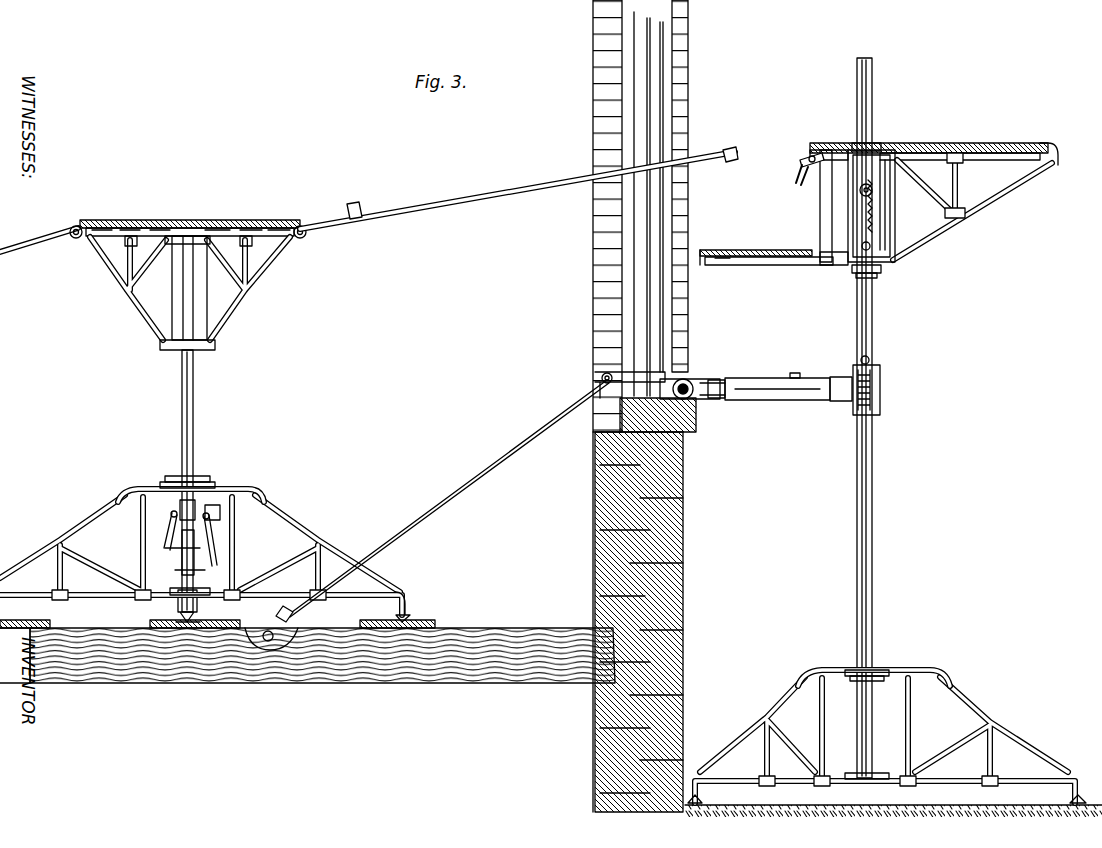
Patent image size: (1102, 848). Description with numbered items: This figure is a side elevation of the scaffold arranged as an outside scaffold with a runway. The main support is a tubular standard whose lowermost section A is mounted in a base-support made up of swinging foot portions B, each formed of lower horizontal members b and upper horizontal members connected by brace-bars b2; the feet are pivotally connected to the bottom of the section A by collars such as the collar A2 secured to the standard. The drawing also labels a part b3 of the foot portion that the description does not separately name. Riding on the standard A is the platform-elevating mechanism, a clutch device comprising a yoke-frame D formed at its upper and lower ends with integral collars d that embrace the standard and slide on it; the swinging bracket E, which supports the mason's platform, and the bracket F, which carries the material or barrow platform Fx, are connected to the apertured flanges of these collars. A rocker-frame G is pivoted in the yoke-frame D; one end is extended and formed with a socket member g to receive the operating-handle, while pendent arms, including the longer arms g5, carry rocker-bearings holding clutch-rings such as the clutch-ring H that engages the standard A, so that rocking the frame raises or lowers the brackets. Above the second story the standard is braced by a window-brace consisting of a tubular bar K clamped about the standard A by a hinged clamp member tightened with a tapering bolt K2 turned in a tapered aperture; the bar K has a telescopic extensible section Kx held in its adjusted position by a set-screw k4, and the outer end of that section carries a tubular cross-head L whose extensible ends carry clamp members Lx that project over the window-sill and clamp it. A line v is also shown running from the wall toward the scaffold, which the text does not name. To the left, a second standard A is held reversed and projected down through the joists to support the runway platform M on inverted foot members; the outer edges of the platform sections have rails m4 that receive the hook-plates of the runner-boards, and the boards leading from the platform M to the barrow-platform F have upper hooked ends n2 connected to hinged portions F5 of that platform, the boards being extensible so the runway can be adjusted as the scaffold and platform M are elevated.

The standard section A is at (190, 400).
The collar A2 is at (878, 772).
The swinging foot portion B is at (543, 646).
The lower horizontal member b is at (850, 768).
The brace-bar b2 is at (1012, 756).
The inner brace b3 is at (789, 754).
The runway platform M is at (228, 228).
The rail m4 is at (170, 228).
The hooked end n2 is at (812, 152).
The barrow platform Fx is at (934, 142).
The bracket F is at (972, 206).
The hinged portion F5 is at (782, 169).
The swinging bracket E is at (825, 262).
The yoke-frame D is at (892, 226).
The collar d is at (878, 147).
The rocker-frame G is at (218, 514).
The socket member g is at (898, 248).
The long pendent arm g5 is at (215, 545).
The clutch-ring H is at (180, 556).
The cross-head L is at (860, 212).
The clamp member Lx is at (604, 374).
The tubular bar K is at (776, 397).
The tapering bolt K2 is at (870, 360).
The telescopic extensible section Kx is at (735, 378).
The set-screw k4 is at (798, 374).
The rope v is at (480, 480).